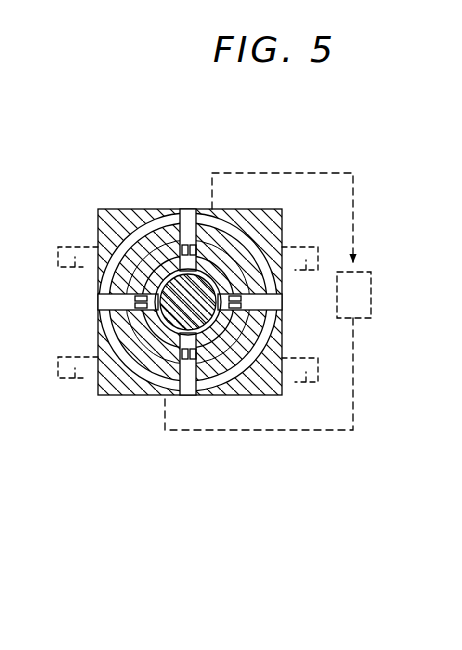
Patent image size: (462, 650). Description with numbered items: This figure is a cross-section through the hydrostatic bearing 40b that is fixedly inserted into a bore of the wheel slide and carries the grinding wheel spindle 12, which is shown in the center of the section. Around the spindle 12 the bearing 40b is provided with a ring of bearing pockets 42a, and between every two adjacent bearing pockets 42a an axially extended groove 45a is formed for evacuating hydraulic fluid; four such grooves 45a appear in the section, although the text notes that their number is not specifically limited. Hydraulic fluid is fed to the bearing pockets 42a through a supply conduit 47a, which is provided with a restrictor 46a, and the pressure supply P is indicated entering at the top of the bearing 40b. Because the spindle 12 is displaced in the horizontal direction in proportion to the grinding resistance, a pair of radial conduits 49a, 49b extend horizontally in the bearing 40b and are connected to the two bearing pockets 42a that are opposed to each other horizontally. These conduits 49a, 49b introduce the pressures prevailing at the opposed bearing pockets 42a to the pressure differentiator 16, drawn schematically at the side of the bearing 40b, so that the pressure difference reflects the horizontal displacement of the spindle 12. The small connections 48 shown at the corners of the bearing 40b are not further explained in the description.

The grinding wheel spindle 12 is at (188, 302).
The pressure differentiator 16 is at (372, 289).
The bearing 40b is at (284, 246).
The bearing pockets 42a is at (163, 270).
The axially extended groove 45a is at (110, 211).
The restrictor 46a is at (178, 258).
The supply conduit 47a is at (207, 252).
The connectors 48 is at (87, 250).
The radial conduit 49a is at (222, 236).
The radial conduit 49b is at (179, 394).
The pressure supply P is at (188, 205).